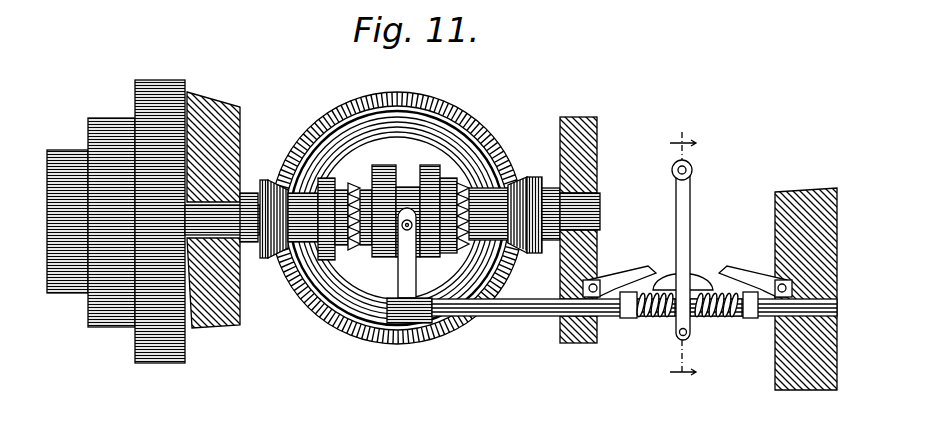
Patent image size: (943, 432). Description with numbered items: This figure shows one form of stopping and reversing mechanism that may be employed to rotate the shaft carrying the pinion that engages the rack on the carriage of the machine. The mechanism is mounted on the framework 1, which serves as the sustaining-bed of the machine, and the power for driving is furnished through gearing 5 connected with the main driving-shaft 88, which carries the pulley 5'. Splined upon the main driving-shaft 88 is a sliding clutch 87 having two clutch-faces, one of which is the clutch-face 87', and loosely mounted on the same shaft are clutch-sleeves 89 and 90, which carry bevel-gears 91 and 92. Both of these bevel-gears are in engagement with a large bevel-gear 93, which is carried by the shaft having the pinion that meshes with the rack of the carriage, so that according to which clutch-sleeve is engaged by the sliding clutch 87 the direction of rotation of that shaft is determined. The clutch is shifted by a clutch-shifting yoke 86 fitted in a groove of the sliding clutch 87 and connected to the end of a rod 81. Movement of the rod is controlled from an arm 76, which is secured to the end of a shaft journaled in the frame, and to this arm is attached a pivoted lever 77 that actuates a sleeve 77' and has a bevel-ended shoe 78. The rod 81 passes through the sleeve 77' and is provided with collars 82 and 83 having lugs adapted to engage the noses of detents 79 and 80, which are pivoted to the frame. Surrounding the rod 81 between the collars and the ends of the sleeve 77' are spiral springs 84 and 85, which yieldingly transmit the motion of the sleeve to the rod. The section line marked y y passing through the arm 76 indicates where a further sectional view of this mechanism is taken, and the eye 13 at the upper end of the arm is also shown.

The framework 1 is at (219, 113).
The gearing 5 is at (397, 206).
The pulley 5' is at (151, 223).
The eye 13 is at (693, 168).
The arm 76 is at (688, 212).
The pivoted lever 77 is at (714, 320).
The sleeve 77' is at (657, 330).
The bevel-ended shoe 78 is at (693, 275).
The detent 79 is at (618, 277).
The detent 80 is at (762, 277).
The rod 81 is at (525, 318).
The collar 82 is at (627, 318).
The collar 83 is at (753, 318).
The spiral spring 84 is at (647, 317).
The spiral spring 85 is at (737, 330).
The clutch-shifting yoke 86 is at (398, 279).
The sliding clutch 87 is at (391, 197).
The clutch-face 87' is at (308, 190).
The main driving-shaft 88 is at (588, 211).
The clutch-sleeve 89 is at (323, 288).
The clutch-sleeve 90 is at (517, 258).
The bevel-gear 91 is at (273, 262).
The bevel-gear 92 is at (507, 183).
The large bevel-gear 93 is at (427, 345).